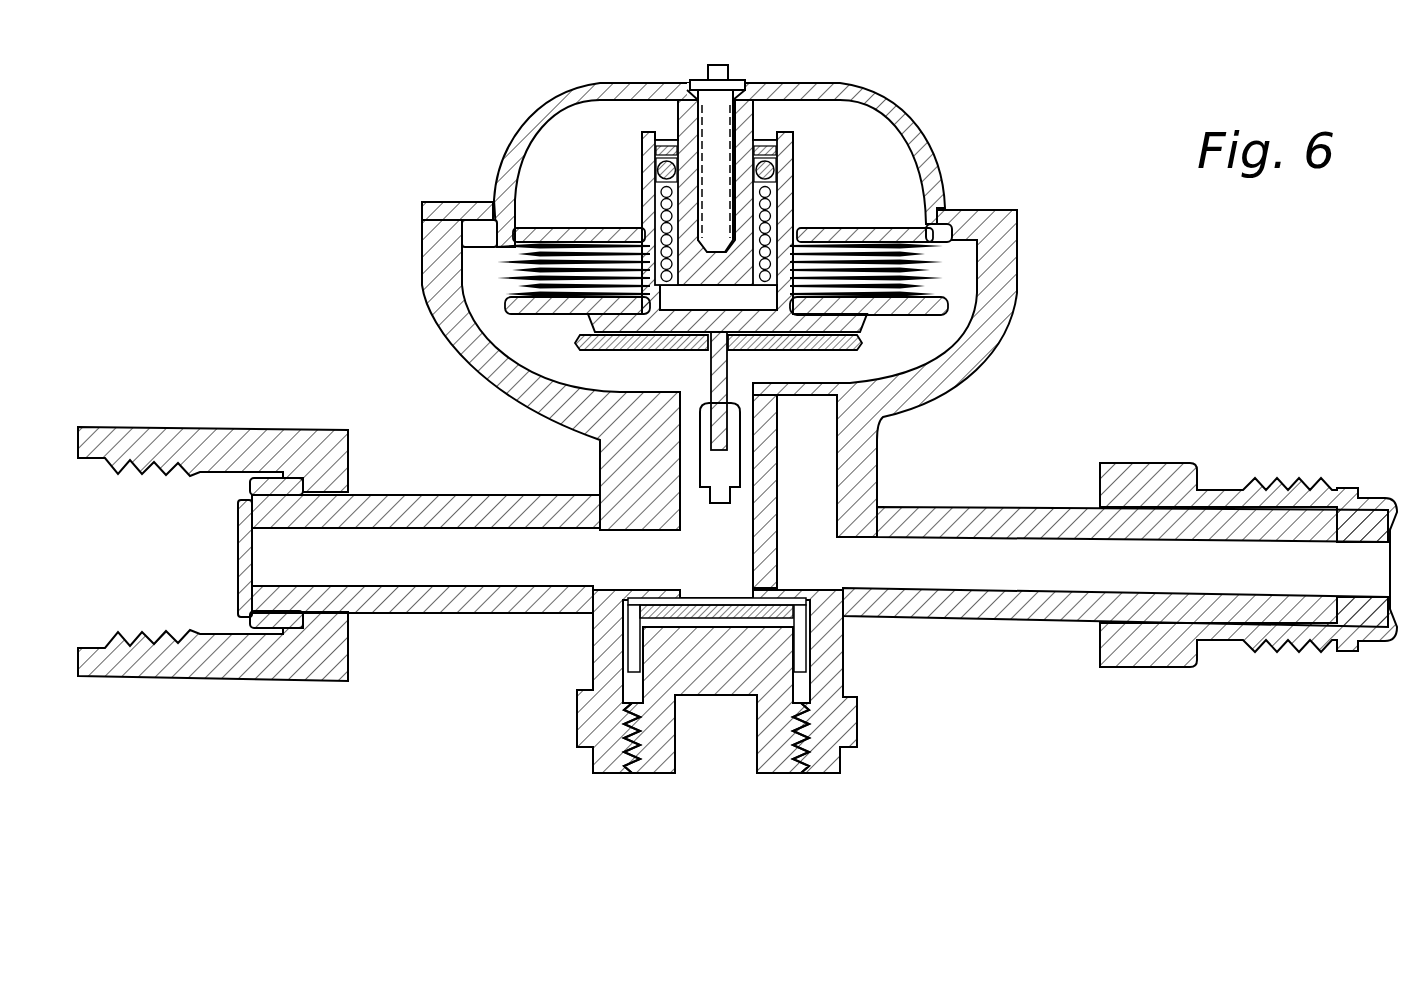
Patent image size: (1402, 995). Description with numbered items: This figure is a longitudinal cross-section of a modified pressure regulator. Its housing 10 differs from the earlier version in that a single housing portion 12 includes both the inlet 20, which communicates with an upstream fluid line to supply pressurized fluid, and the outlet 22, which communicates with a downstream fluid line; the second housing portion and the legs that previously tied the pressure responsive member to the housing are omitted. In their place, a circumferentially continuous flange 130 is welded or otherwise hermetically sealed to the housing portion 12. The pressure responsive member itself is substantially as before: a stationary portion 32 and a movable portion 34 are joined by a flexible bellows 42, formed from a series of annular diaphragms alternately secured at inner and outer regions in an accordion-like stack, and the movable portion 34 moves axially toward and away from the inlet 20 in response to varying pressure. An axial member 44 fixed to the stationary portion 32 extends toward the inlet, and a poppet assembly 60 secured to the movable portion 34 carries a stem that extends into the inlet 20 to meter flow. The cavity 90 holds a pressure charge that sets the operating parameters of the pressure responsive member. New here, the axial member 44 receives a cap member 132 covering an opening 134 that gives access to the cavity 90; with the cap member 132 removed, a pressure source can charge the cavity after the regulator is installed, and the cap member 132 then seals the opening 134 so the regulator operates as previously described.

The housing 10 is at (1028, 277).
The housing portion 12 is at (440, 277).
The inlet 20 is at (745, 558).
The outlet 22 is at (820, 470).
The stationary portion of the pressure responsive member 32 is at (878, 117).
The movable portion of the pressure responsive member 34 is at (522, 304).
The bellows 42 is at (560, 270).
The axial member 44 is at (657, 203).
The poppet assembly 60 is at (703, 468).
The cavity 90 is at (864, 200).
The flange 130 is at (455, 200).
The cap member 132 is at (733, 63).
The opening 134 is at (670, 83).